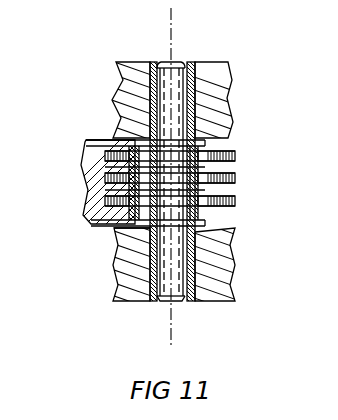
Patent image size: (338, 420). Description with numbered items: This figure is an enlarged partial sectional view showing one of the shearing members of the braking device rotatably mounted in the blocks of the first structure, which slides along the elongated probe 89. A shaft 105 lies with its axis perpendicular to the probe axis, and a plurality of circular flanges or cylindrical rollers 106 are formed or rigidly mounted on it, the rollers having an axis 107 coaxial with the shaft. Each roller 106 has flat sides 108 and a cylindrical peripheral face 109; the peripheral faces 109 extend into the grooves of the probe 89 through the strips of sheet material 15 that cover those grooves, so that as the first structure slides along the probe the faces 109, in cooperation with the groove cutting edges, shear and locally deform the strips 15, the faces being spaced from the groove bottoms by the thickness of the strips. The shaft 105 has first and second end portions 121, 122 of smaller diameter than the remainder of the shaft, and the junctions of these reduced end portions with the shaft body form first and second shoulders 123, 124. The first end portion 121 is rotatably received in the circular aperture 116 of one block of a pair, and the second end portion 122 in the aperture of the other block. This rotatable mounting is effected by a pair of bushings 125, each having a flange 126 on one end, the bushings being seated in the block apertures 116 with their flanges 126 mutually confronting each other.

The strips of sheet material 15 is at (107, 213).
The elongated probe 89 is at (80, 171).
The shaft 105 is at (213, 208).
The circular flanges or cylindrical rollers 106 is at (238, 160).
The roller axis 107 is at (174, 327).
The flat sides 108 is at (227, 152).
The cylindrical peripheral faces 109 is at (234, 181).
The circular aperture 116 is at (163, 66).
The first end portion 121 is at (180, 66).
The second end portion 122 is at (165, 302).
The first shoulder 123 is at (229, 118).
The second shoulder 124 is at (122, 248).
The bushing 125 is at (229, 72).
The flange 126 is at (97, 140).